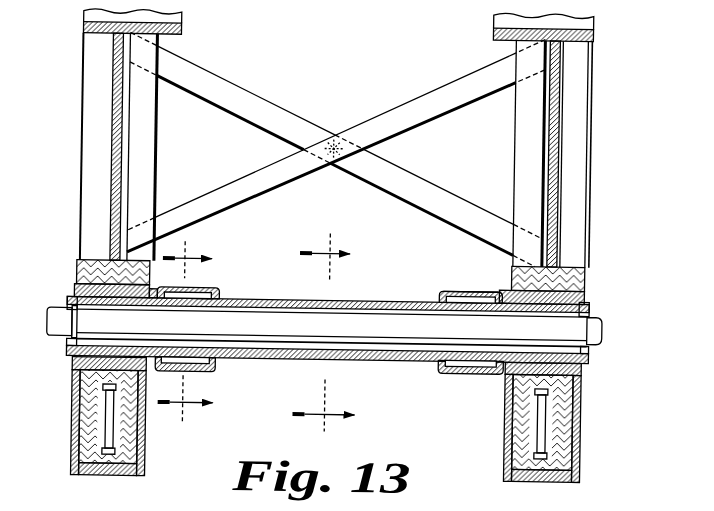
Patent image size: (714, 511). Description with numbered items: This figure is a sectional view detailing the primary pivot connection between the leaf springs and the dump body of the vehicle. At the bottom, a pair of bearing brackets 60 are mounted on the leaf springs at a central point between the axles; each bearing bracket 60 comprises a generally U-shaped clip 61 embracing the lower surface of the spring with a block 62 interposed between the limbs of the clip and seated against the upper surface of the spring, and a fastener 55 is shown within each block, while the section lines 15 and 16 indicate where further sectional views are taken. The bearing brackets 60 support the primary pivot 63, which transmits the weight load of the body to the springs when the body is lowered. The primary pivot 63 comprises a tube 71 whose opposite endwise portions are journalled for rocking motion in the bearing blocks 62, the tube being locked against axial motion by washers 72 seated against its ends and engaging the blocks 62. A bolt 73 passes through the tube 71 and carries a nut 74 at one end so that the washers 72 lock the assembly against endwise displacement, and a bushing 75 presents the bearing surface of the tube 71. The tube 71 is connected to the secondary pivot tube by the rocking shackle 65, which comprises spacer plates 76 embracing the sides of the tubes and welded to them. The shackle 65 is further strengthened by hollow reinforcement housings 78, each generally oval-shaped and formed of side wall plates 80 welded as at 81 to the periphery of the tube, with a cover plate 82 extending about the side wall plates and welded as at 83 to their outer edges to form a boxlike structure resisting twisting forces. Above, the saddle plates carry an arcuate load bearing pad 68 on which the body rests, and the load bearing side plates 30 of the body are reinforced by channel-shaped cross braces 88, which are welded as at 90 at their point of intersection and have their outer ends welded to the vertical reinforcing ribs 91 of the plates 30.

The load bearing side plate 30 is at (112, 108).
The cross brace 88 is at (250, 107).
The weld at intersection 90 is at (333, 138).
The vertical reinforcing rib 91 is at (142, 135).
The load bearing pad 68 is at (87, 265).
The bushing 75 is at (80, 370).
The washer 72 is at (72, 310).
The primary pivot 63 is at (608, 317).
The nut 74 is at (62, 338).
The block 62 is at (110, 365).
The bolt 55 is at (85, 428).
The U-shaped clip 61 is at (75, 450).
The bearing bracket 60 is at (588, 411).
The rocking shackle 65 is at (357, 300).
The weld of cover plate 83 is at (445, 290).
The hollow reinforcement housing 78 is at (465, 290).
The side wall plate 80 is at (503, 290).
The weld of side wall plate 81 is at (222, 294).
The cover plate 82 is at (462, 372).
The spacer plate 76 is at (298, 301).
The tube 71 is at (403, 299).
The bolt 73 is at (396, 345).
The section line 15 is at (193, 334).
The section line 16 is at (312, 332).